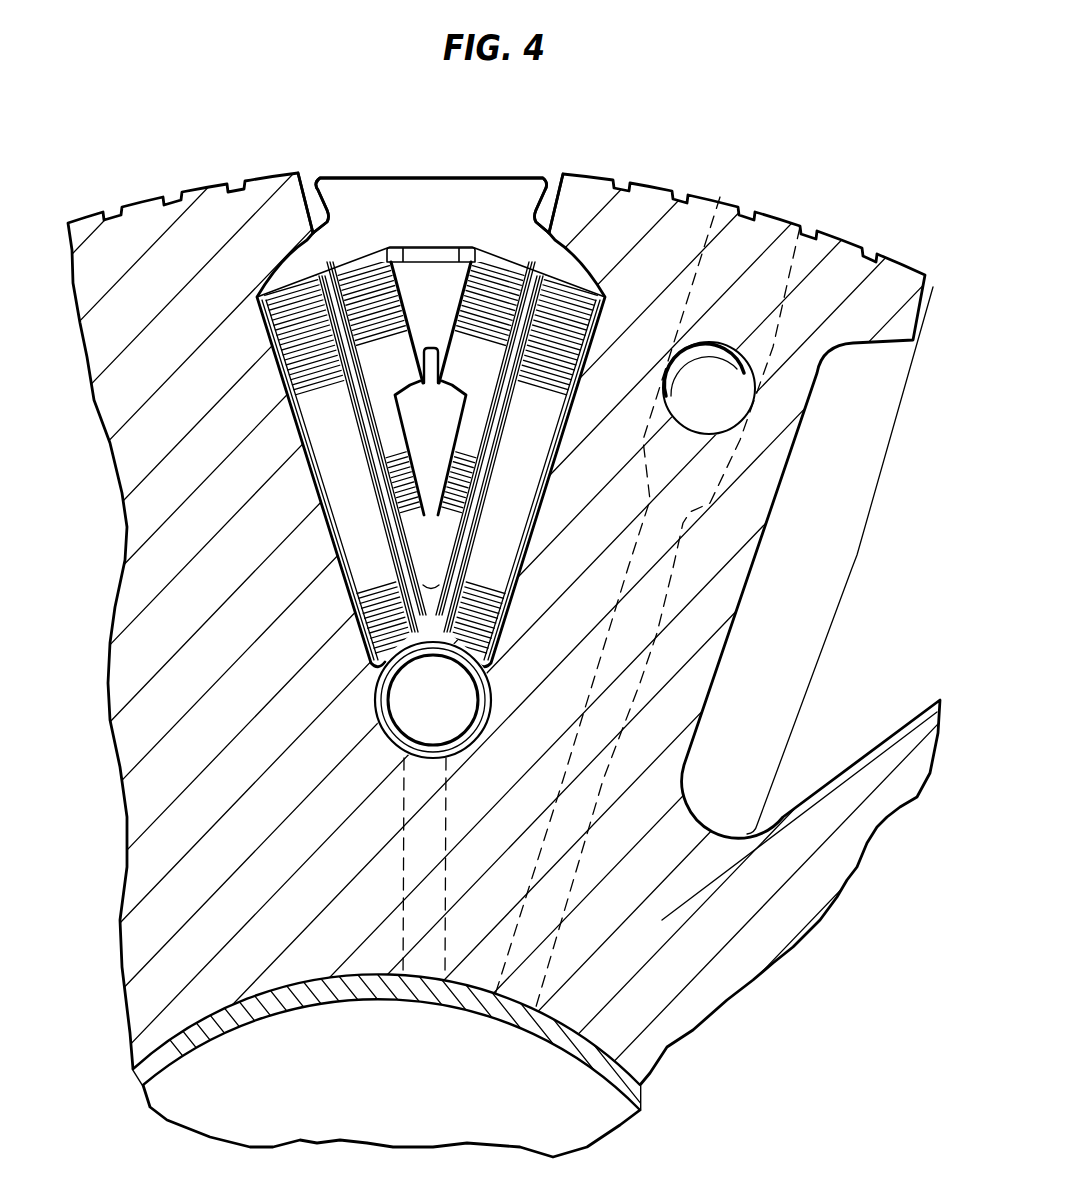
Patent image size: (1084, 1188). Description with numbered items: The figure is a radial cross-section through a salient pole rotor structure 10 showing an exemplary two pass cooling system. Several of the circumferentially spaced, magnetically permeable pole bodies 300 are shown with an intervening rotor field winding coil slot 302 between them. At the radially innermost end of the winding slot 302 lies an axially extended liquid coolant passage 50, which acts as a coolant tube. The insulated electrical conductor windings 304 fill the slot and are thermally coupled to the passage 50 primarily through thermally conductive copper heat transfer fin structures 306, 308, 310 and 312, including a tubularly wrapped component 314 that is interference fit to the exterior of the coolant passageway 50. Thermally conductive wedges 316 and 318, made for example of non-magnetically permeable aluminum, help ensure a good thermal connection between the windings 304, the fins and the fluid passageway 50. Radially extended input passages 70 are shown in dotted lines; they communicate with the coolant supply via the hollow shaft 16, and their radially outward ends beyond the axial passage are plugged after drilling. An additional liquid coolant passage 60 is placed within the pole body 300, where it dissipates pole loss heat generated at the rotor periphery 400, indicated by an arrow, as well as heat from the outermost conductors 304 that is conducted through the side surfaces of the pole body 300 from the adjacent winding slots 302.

The salient pole rotor structure 10 is at (262, 135).
The hollow shaft 16 is at (337, 1005).
The axially extended liquid coolant passage 50 is at (407, 718).
The liquid coolant passage 60 is at (746, 370).
The radially extended input passage 70 is at (455, 826).
The pole body 300 is at (799, 603).
The rotor field winding coil slot 302 is at (552, 160).
The insulated electrical conductor windings 304 is at (400, 367).
The heat transfer fin structure 306 is at (284, 433).
The heat transfer fin structure 308 is at (395, 530).
The heat transfer fin structure 310 is at (460, 548).
The heat transfer fin structure 312 is at (545, 522).
The tubularly wrapped component 314 is at (488, 735).
The thermally conductive wedge 316 is at (450, 540).
The thermally conductive wedge 318 is at (449, 304).
The rotor periphery 400 is at (724, 194).